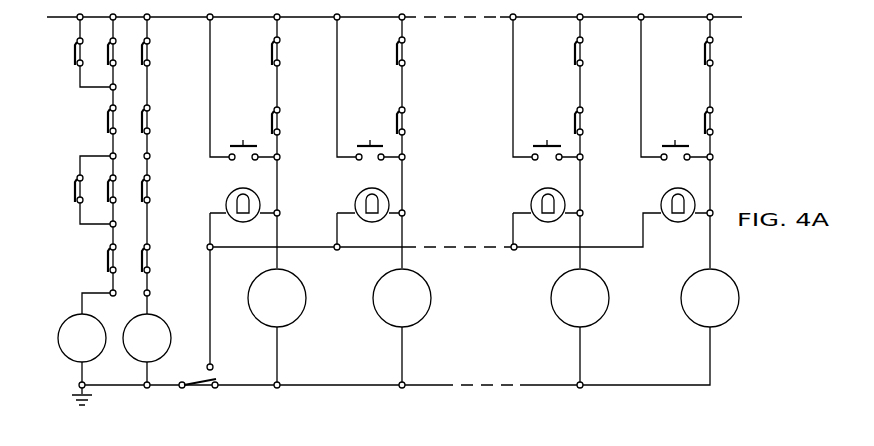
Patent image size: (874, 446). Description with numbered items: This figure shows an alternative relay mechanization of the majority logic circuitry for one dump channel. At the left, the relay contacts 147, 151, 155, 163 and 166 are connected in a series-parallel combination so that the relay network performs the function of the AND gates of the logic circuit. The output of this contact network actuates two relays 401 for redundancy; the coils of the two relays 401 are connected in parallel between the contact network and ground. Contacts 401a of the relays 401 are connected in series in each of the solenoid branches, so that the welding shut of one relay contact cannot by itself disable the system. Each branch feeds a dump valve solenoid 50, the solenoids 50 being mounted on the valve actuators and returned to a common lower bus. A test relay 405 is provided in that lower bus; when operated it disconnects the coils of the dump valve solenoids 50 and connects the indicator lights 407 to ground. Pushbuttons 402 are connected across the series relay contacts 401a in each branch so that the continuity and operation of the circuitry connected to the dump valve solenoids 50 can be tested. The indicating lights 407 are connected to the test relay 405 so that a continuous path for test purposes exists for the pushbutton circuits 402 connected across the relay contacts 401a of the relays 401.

The relay contact 147 is at (73, 52).
The relay contact 155 is at (141, 48).
The relay contact 163 is at (106, 120).
The relay contact 151 is at (73, 188).
The relay contact 166 is at (106, 258).
The relay 401 is at (130, 356).
The test relay 405 is at (210, 382).
The relay contact 401a is at (272, 48).
The pushbutton 402 is at (255, 145).
The indicator light 407 is at (230, 194).
The dump valve solenoid 50 is at (299, 318).